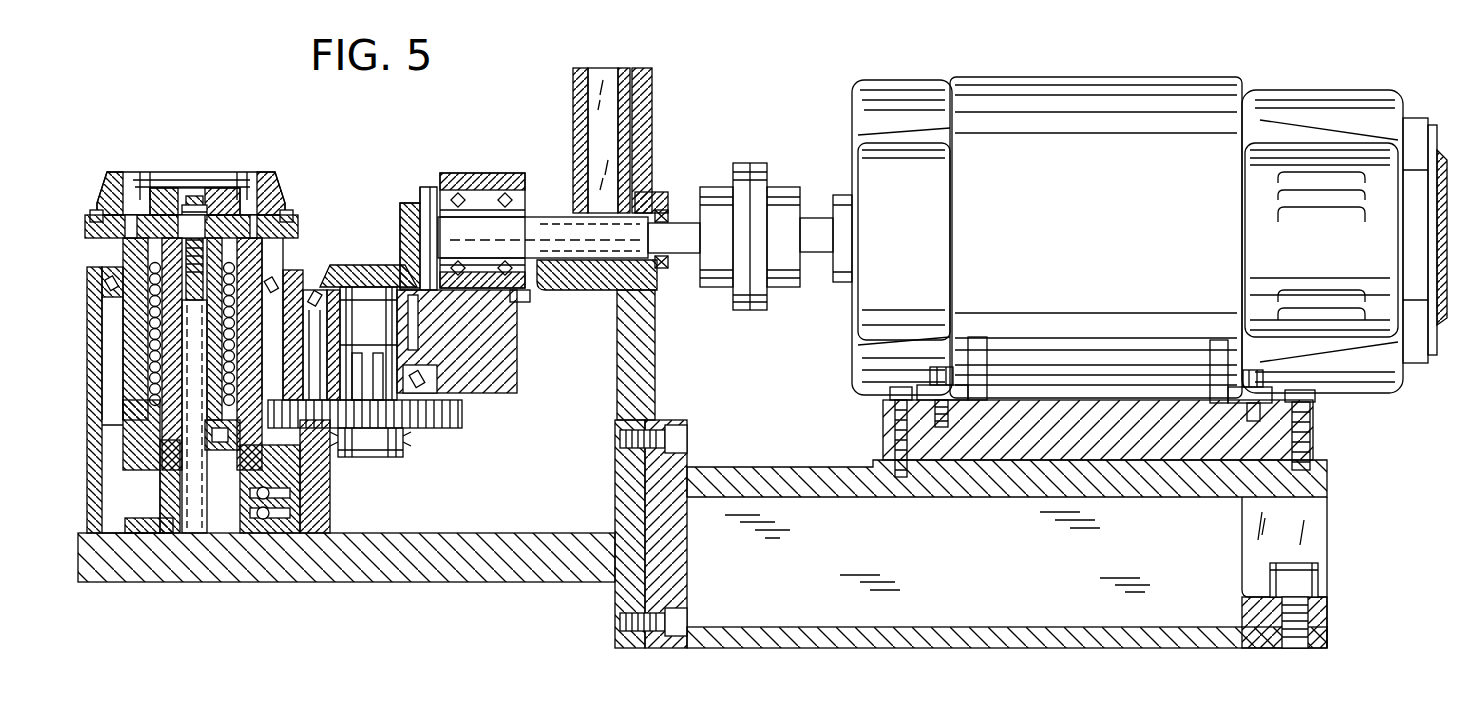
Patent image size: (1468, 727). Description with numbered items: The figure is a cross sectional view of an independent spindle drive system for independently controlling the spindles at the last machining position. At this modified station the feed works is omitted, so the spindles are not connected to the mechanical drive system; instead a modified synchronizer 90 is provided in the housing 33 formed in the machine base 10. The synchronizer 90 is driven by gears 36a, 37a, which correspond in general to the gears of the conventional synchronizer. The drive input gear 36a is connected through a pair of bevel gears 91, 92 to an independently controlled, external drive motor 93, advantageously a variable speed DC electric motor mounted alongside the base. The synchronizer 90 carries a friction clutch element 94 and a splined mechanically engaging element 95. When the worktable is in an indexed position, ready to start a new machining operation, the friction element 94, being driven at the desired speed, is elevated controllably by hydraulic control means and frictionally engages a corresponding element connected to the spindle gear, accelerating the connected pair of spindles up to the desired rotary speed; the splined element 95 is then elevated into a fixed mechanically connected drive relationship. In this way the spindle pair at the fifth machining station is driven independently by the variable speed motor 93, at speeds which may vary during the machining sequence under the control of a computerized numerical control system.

The machine base 10 is at (655, 351).
The housing 33 is at (478, 505).
The drive input gear 36a is at (443, 417).
The gear 37a is at (120, 417).
The synchronizer 90 is at (431, 283).
The bevel gear 91 is at (370, 273).
The bevel gear 92 is at (408, 200).
The drive motor 93 is at (1094, 97).
The friction clutch element 94 is at (277, 192).
The splined mechanically engaging element 95 is at (163, 195).